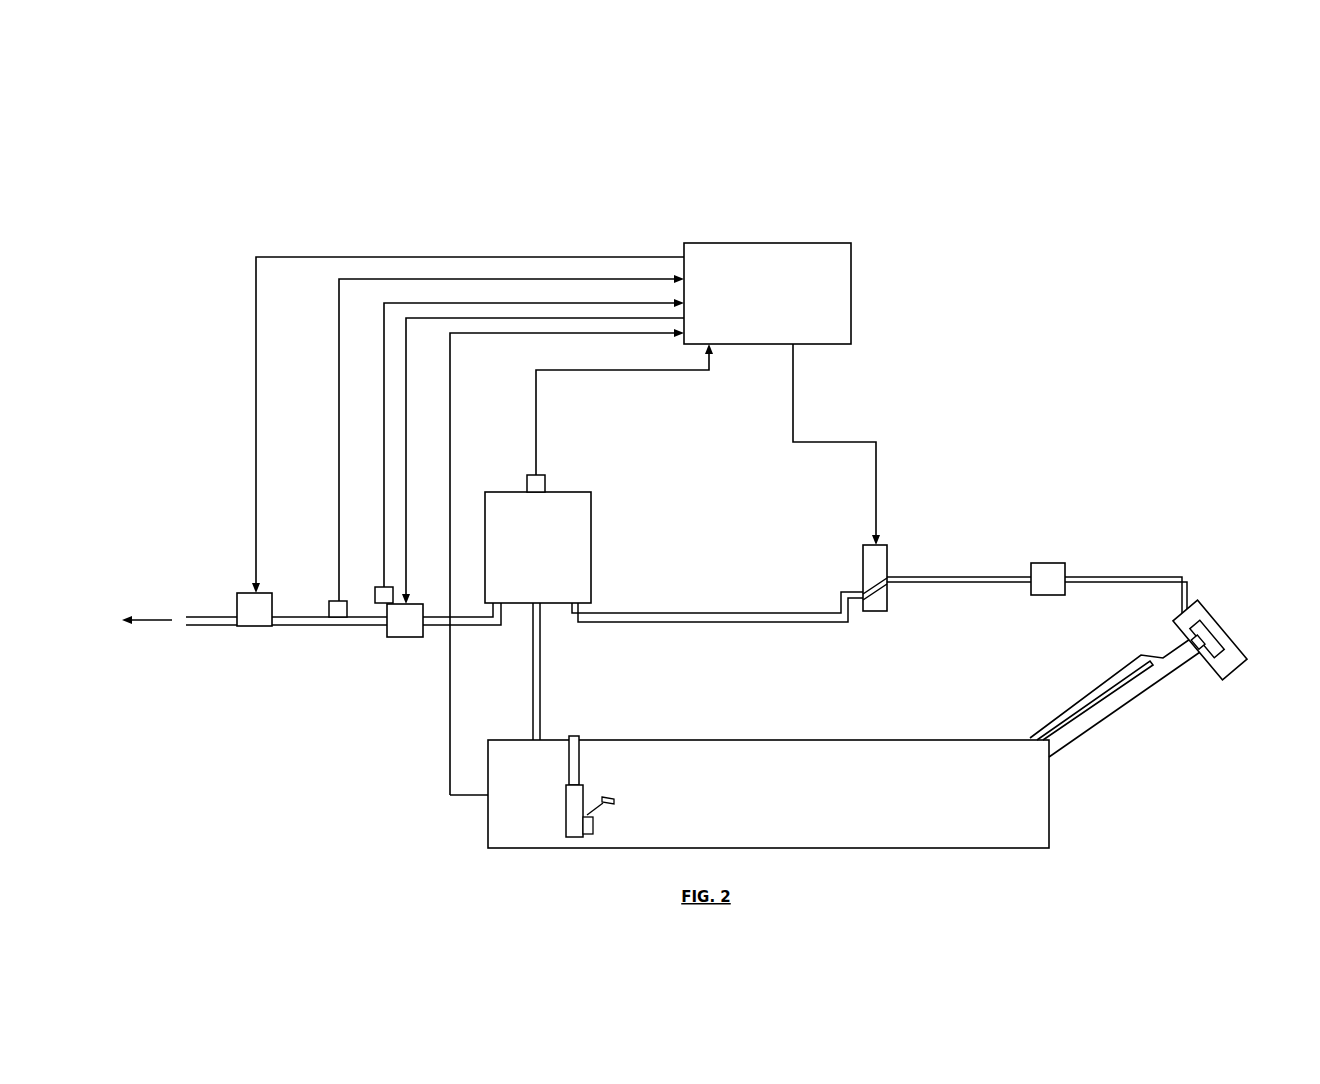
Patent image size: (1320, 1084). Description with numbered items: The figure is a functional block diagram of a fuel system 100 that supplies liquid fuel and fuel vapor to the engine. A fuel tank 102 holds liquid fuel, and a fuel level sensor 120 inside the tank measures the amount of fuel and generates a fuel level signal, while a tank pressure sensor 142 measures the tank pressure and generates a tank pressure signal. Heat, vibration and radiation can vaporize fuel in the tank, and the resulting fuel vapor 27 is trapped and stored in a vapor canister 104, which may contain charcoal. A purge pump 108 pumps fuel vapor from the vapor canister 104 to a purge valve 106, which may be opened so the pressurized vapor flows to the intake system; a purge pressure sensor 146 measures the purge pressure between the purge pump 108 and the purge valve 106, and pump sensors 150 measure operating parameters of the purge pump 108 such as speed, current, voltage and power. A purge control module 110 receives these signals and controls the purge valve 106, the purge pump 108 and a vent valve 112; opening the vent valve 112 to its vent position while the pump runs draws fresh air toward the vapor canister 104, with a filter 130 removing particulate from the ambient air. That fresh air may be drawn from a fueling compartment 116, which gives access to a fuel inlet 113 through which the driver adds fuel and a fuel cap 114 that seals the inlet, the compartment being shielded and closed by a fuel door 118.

The fuel system 100 is at (200, 106).
The fuel tank 102 is at (768, 740).
The vapor canister 104 is at (591, 510).
The purge valve 106 is at (250, 592).
The purge pump 108 is at (410, 637).
The purge control module 110 is at (758, 243).
The vent valve 112 is at (863, 548).
The fuel inlet 113 is at (1190, 655).
The fuel cap 114 is at (1216, 656).
The fueling compartment 116 is at (1240, 663).
The fuel door 118 is at (1226, 624).
The fuel level sensor 120 is at (584, 790).
The filter 130 is at (1050, 563).
The tank pressure sensor 142 is at (527, 478).
The purge pressure sensor 146 is at (330, 600).
The pump sensors 150 is at (377, 598).
The fuel vapor 27 is at (145, 623).